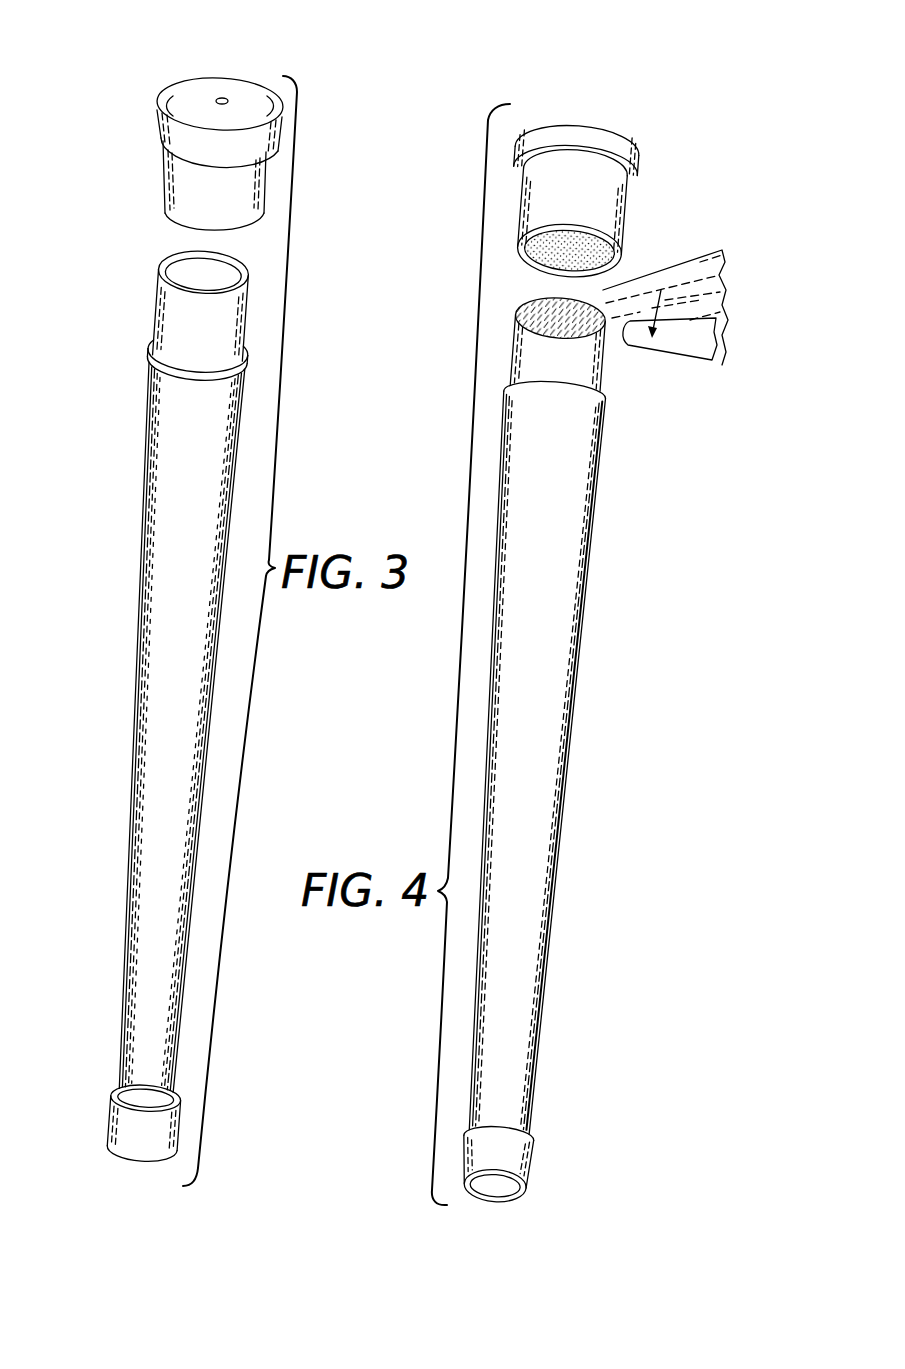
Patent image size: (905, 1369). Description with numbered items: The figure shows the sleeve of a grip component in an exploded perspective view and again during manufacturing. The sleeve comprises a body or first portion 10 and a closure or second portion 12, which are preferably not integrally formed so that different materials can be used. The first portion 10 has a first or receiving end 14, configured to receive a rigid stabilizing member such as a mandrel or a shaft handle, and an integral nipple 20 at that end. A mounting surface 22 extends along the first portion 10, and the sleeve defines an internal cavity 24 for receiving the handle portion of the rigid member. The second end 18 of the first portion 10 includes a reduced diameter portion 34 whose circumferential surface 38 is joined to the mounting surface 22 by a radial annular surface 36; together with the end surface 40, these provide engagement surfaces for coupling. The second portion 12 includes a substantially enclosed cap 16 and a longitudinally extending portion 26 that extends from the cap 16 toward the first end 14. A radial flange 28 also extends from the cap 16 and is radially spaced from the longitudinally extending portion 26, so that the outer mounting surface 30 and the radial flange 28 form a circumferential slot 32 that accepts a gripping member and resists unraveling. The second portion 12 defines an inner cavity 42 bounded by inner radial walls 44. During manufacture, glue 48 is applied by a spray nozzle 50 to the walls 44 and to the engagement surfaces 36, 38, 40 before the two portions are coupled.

In FIG. 3, the first portion 10 is at (187, 723).
In FIG. 4, the first portion 10 is at (553, 774).
In FIG. 3, the second portion 12 is at (200, 124).
In FIG. 3, the first end 14 is at (143, 1144).
In FIG. 3, the cap 16 is at (186, 84).
In FIG. 3, the second end 18 is at (187, 723).
In FIG. 3, the nipple 20 is at (182, 1126).
In FIG. 3, the mounting surface 22 is at (130, 830).
In FIG. 4, the internal cavity 24 is at (493, 1198).
In FIG. 3, the longitudinally extending portion 26 is at (268, 184).
In FIG. 4, the longitudinally extending portion 26 is at (642, 215).
In FIG. 4, the radial flange 28 is at (640, 180).
In FIG. 4, the outer mounting surface 30 is at (625, 237).
In FIG. 4, the circumferential slot 32 is at (632, 197).
In FIG. 3, the reduced diameter portion 34 is at (218, 301).
In FIG. 3, the radial annular surface 36 is at (248, 358).
In FIG. 3, the circumferential surface 38 is at (248, 308).
In FIG. 4, the circumferential surface 38 is at (605, 372).
In FIG. 3, the end surface 40 is at (247, 278).
In FIG. 4, the inner cavity 42 is at (536, 254).
In FIG. 4, the inner radial walls 44 is at (723, 248).
In FIG. 4, the glue 48 is at (520, 328).
In FIG. 4, the spray nozzle 50 is at (703, 340).